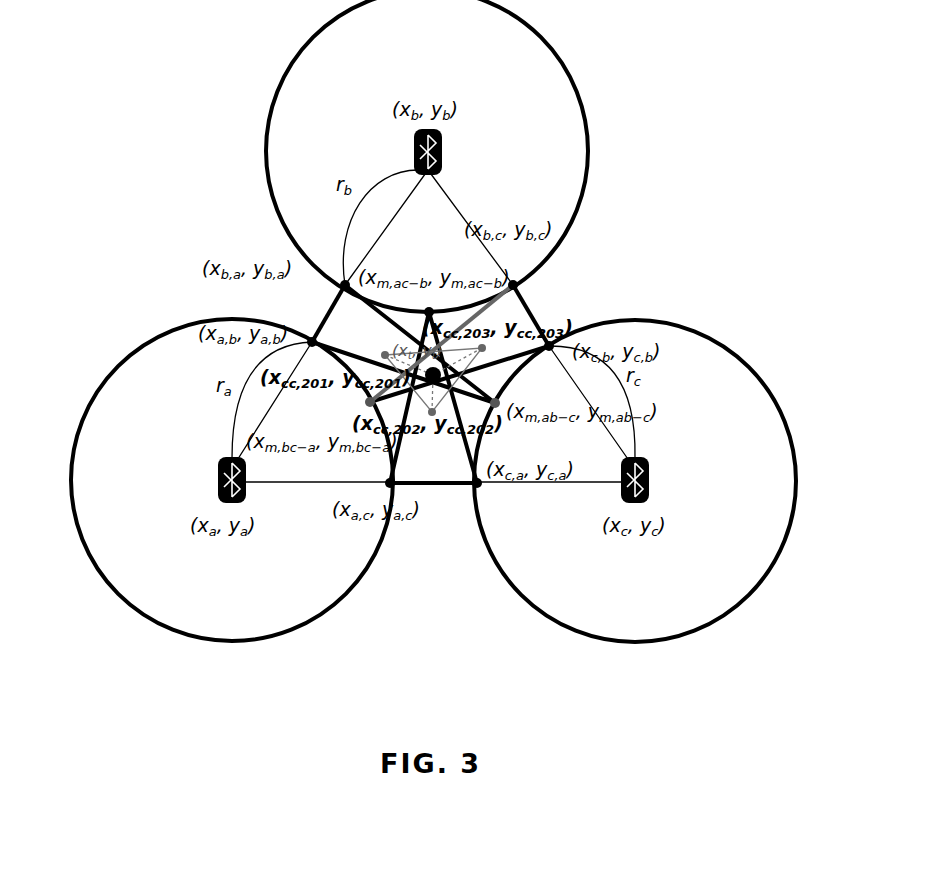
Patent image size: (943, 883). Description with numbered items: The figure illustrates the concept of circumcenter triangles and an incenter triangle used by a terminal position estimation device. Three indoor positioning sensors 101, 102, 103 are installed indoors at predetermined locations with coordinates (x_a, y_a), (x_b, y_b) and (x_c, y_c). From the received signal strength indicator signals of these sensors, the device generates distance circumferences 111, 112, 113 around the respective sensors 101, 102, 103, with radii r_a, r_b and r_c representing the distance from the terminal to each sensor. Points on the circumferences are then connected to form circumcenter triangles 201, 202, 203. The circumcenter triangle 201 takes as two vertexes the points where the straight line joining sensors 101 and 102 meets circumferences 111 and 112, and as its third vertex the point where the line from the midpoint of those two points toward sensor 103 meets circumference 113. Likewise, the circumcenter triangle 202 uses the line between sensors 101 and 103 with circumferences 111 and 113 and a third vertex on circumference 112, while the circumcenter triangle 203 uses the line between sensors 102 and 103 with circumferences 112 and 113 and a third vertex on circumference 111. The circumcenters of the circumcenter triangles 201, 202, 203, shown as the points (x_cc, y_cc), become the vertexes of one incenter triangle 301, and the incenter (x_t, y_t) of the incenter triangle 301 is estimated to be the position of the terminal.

The indoor positioning sensor 101 is at (217, 480).
The indoor positioning sensor 102 is at (413, 143).
The indoor positioning sensor 103 is at (652, 482).
The distance circumference 111 is at (123, 353).
The distance circumference 112 is at (588, 165).
The distance circumference 113 is at (740, 355).
The circumcenter triangle 201 is at (343, 312).
The circumcenter triangle 202 is at (442, 463).
The circumcenter triangle 203 is at (527, 323).
The incenter triangle 301 is at (455, 440).